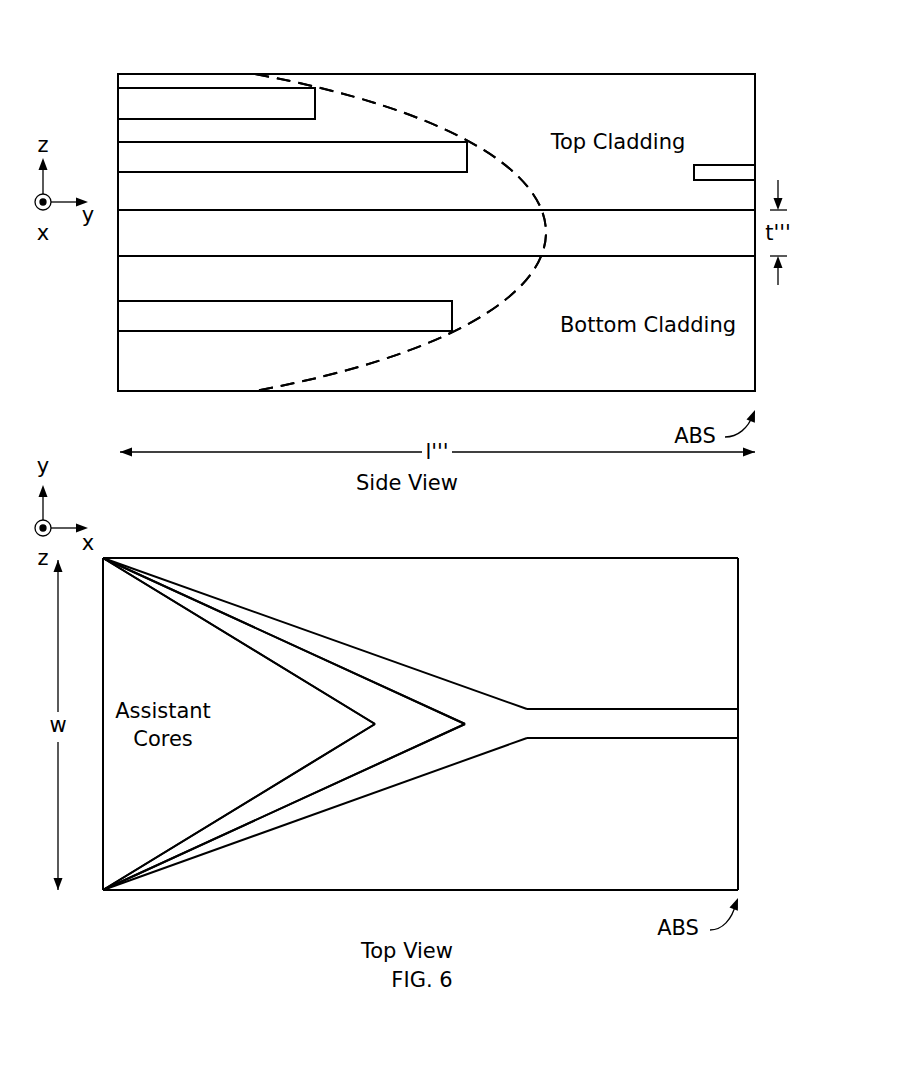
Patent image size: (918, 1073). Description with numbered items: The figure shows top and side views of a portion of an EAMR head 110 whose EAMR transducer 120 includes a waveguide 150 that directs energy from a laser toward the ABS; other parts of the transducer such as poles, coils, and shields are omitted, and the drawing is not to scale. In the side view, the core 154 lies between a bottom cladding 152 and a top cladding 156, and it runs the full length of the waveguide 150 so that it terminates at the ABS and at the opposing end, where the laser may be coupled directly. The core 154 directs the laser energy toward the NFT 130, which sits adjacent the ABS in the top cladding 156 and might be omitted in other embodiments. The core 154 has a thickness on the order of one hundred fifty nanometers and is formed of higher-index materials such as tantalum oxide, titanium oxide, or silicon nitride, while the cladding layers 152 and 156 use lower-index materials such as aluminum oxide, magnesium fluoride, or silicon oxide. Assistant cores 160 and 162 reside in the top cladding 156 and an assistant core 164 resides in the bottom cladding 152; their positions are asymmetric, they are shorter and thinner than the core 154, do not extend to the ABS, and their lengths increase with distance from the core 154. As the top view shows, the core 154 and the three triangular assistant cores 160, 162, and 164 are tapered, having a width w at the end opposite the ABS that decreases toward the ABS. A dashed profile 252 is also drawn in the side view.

The EAMR head 110 is at (397, 24).
The EAMR transducer 120 is at (239, 52).
The waveguide 150 is at (207, 540).
The NFT 130 is at (755, 172).
The bottom cladding 152 is at (429, 573).
The core 154 is at (118, 224).
The top cladding 156 is at (755, 103).
The assistant core 160 is at (118, 104).
The assistant core 162 is at (118, 157).
The assistant core 164 is at (118, 315).
The mode profile 252 is at (300, 392).